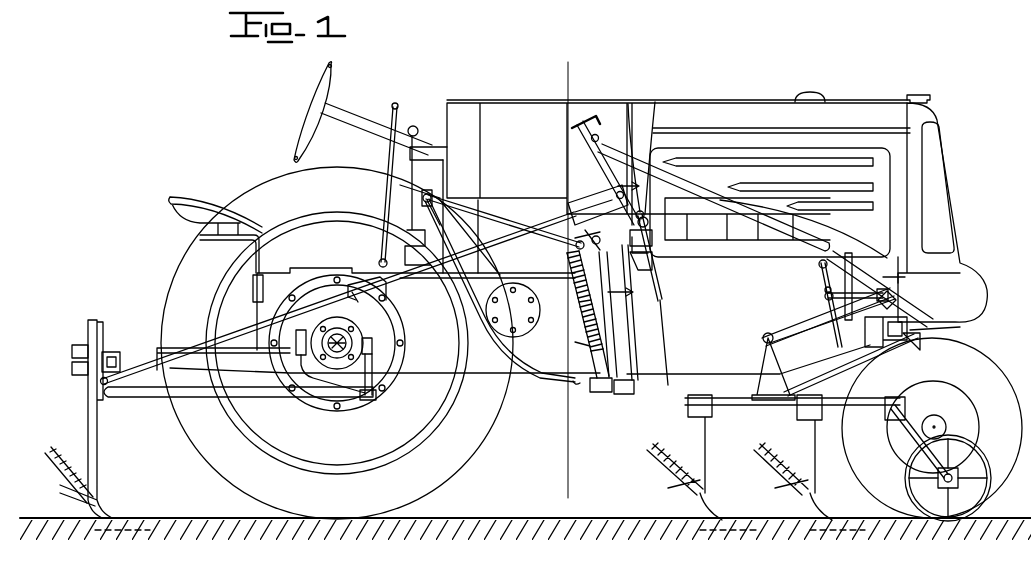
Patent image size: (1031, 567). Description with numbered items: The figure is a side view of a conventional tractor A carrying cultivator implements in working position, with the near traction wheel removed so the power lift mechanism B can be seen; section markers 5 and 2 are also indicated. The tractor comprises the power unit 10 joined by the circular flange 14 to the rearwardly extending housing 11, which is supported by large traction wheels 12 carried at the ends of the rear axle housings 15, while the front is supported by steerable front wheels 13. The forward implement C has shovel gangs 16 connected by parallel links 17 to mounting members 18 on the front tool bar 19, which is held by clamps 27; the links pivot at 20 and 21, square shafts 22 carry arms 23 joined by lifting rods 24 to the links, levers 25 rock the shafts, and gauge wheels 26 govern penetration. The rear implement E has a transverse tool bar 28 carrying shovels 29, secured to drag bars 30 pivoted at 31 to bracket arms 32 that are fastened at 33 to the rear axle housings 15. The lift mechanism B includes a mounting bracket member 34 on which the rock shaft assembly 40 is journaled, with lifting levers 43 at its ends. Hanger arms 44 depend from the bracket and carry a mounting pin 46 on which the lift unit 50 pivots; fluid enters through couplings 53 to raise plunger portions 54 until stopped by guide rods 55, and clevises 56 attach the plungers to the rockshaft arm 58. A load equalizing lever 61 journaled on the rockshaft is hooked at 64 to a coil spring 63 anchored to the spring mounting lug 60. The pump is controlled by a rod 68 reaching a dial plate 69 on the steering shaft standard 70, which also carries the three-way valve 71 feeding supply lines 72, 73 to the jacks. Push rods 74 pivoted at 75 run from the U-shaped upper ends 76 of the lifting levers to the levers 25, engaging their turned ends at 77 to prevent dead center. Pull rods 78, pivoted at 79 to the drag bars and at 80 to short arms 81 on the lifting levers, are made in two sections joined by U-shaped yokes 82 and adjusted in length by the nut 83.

The section line 5- 5 is at (597, 68).
The section line 2- 2 is at (652, 298).
The power unit 10 is at (717, 207).
The housing 11 is at (480, 372).
The traction wheels 12 is at (470, 460).
The front wheels 13 is at (1002, 360).
The flange 14 is at (640, 358).
The rear axle housings 15 is at (372, 320).
The shovel gangs 16 is at (705, 440).
The parallel links 17 is at (808, 352).
The mounting members 18 is at (910, 312).
The front tool bars 19 is at (950, 330).
The pivotal connection 20 is at (762, 362).
The pivotal connection 21 is at (922, 345).
The square shafts 22 is at (900, 297).
The arms 23 is at (824, 295).
The lifting rods 24 is at (820, 316).
The levers 25 is at (822, 268).
The gauge wheels 26 is at (985, 460).
The clamps 27 is at (876, 362).
The transverse tool bar 28 is at (115, 352).
The shovels 29 is at (86, 428).
The drag bars 30 is at (178, 404).
The pivotal connection 31 is at (370, 400).
The bracket arms 32 is at (376, 366).
The securing point 33 is at (376, 340).
The mounting bracket member 34 is at (650, 262).
The rock shaft assembly 40 is at (667, 248).
The lifting levers 43 is at (660, 96).
The hanger arms 44 is at (630, 331).
The mounting pin 46 is at (636, 389).
The lift unit 50 is at (663, 298).
The couplings 53 is at (600, 392).
The plunger portions 54 is at (572, 287).
The guide rods 55 is at (582, 344).
The clevises 56 is at (592, 243).
The rockshaft arm 58 is at (648, 210).
The spring mounting lug 60 is at (575, 384).
The load equalizing lever 61 is at (585, 238).
The coil spring 63 is at (585, 318).
The hook connection 64 is at (575, 246).
The rod 68 is at (497, 213).
The dial plate 69 is at (428, 196).
The steering shaft standard 70 is at (442, 240).
The three-way valve 71 is at (432, 197).
The supply line 72 is at (460, 268).
The supply line 73 is at (477, 243).
The push rods 74 is at (710, 178).
The pivot connection 75 is at (850, 248).
The U-shaped upper ends 76 is at (605, 122).
The engagement 77 is at (585, 122).
The pull rods 78 is at (246, 328).
The pivotal connection 79 is at (104, 388).
The pivotal connection 80 is at (575, 210).
The short arms 81 is at (590, 200).
The U-shaped yokes 82 is at (360, 280).
The nut 83 is at (364, 302).
The tractor A is at (750, 84).
The power lift mechanism B is at (588, 187).
The forward implement C is at (683, 434).
The rear implement E is at (77, 334).